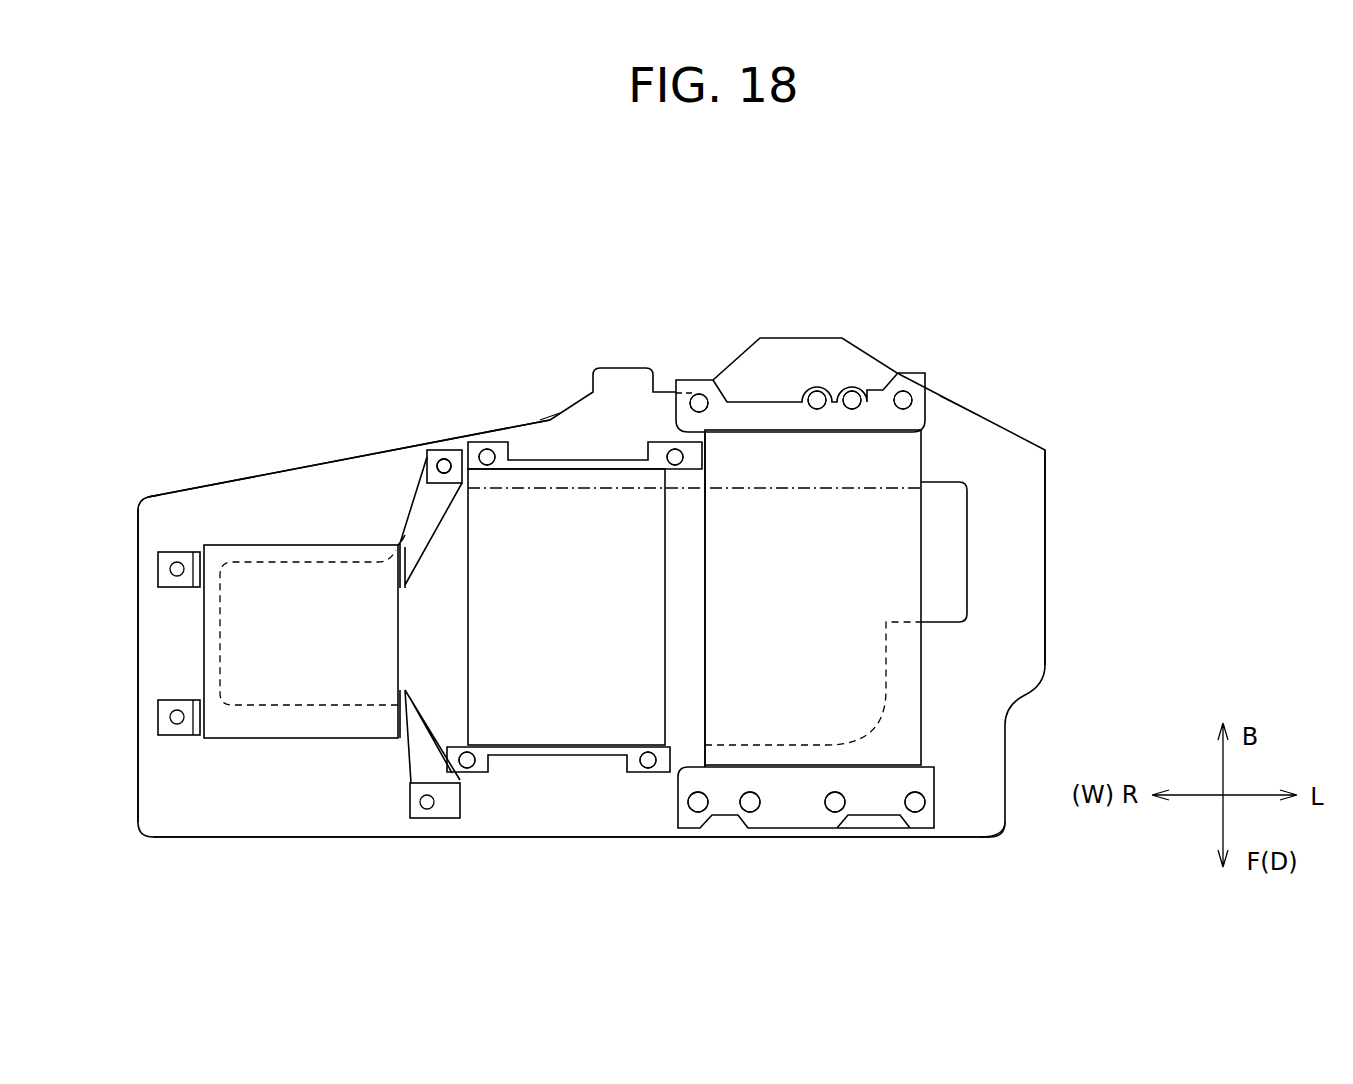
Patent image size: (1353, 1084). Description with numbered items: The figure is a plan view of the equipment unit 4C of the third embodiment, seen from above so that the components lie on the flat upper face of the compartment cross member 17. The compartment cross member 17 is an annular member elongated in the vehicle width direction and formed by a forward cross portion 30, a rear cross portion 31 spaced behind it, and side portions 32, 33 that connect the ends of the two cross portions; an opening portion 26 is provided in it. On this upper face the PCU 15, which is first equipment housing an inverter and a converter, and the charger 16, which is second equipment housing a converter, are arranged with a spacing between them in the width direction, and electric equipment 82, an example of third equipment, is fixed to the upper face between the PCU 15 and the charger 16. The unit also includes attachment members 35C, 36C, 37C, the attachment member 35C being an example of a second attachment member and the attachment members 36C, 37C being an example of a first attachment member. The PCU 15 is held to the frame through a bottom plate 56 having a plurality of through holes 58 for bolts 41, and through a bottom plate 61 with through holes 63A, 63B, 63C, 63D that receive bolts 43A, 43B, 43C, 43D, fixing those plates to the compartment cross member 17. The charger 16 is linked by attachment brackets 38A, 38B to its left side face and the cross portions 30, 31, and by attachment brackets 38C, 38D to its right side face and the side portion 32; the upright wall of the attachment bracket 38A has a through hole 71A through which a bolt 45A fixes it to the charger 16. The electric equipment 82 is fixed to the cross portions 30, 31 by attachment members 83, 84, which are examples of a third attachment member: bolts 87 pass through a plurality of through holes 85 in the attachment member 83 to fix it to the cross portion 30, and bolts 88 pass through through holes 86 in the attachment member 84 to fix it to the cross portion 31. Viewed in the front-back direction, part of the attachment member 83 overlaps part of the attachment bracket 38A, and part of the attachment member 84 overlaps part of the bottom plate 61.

The equipment unit 4C is at (510, 237).
The PCU 15 is at (912, 632).
The charger 16 is at (235, 633).
The compartment cross member 17 is at (995, 392).
The opening portion 26 is at (955, 522).
The cross portion 30 is at (595, 830).
The cross portion 31 is at (382, 448).
The side portion 32 is at (157, 684).
The side portion 33 is at (1030, 570).
The attachment member 35C is at (283, 378).
The attachment member 36C is at (962, 848).
The attachment member 37C is at (972, 330).
The attachment bracket 38A is at (422, 700).
The attachment bracket 38B is at (428, 518).
The attachment bracket 38C is at (170, 717).
The attachment bracket 38D is at (170, 569).
The bolts 41 is at (806, 864).
The bolt 43A is at (700, 348).
The bolt 43B is at (793, 341).
The bolt 43C is at (852, 314).
The bolt 43D is at (903, 341).
The bolt 45A is at (437, 406).
The bottom plate 56 is at (932, 790).
The through holes 58 is at (915, 813).
The bottom plate 61 is at (927, 420).
The through hole 63A is at (698, 394).
The through hole 63B is at (815, 391).
The through hole 63C is at (852, 391).
The through hole 63D is at (903, 391).
The through hole 71A is at (448, 450).
The electric equipment 82 is at (590, 515).
The attachment member 83 is at (570, 750).
The attachment member 84 is at (545, 468).
The through holes 85 is at (645, 768).
The through holes 86 is at (672, 449).
The bolts 87 is at (562, 844).
The bolts 88 is at (572, 374).